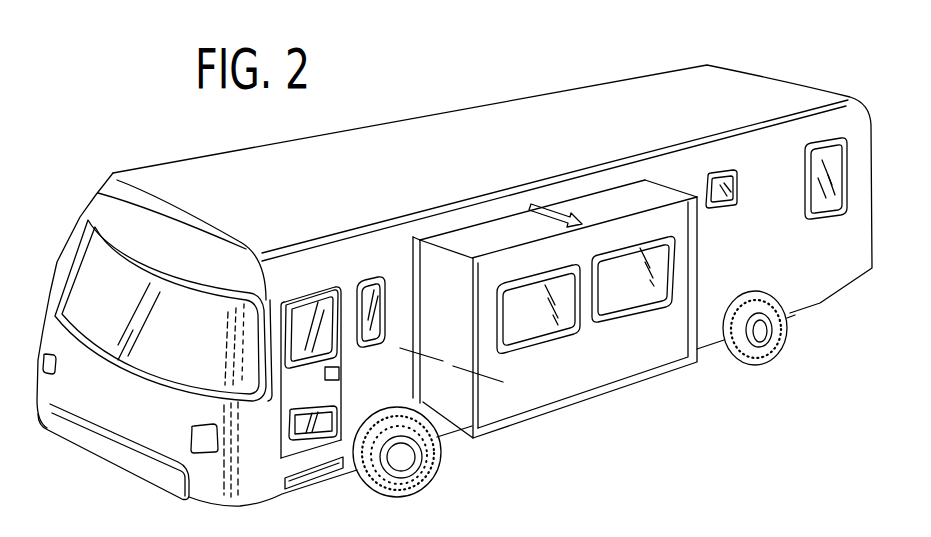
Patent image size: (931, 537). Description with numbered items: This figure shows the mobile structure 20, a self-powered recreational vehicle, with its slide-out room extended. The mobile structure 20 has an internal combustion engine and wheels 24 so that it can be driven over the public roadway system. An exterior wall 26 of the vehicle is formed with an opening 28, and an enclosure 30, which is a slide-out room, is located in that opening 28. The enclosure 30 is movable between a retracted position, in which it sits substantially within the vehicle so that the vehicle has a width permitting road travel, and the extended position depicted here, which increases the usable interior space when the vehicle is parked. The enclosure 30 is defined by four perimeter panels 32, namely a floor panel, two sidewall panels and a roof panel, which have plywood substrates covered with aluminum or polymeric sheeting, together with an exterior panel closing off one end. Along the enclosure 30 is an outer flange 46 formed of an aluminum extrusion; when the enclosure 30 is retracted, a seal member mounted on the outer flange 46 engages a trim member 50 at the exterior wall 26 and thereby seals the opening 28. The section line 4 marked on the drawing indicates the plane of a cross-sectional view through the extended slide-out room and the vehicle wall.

The mobile structure 20 is at (452, 105).
The wheels 24 is at (418, 482).
The exterior wall 26 is at (767, 142).
The opening 28 is at (454, 238).
The enclosure 30 is at (616, 370).
The perimeter panels 32 is at (602, 200).
The outer flange 46 is at (628, 210).
The trim member 50 is at (497, 212).
The section line 4- 4 is at (405, 343).